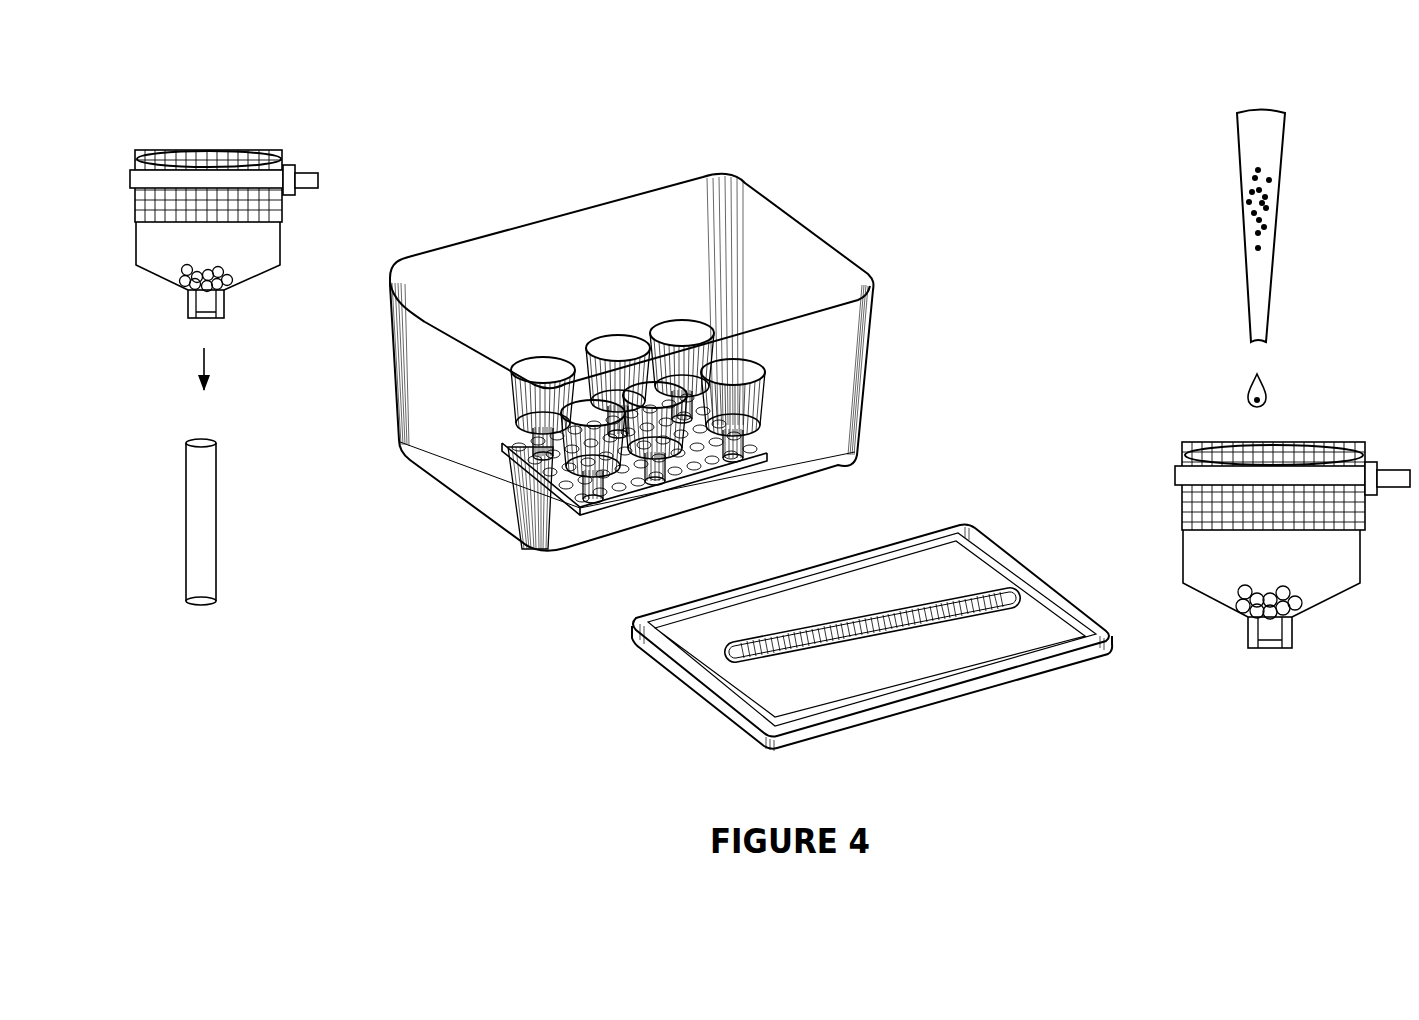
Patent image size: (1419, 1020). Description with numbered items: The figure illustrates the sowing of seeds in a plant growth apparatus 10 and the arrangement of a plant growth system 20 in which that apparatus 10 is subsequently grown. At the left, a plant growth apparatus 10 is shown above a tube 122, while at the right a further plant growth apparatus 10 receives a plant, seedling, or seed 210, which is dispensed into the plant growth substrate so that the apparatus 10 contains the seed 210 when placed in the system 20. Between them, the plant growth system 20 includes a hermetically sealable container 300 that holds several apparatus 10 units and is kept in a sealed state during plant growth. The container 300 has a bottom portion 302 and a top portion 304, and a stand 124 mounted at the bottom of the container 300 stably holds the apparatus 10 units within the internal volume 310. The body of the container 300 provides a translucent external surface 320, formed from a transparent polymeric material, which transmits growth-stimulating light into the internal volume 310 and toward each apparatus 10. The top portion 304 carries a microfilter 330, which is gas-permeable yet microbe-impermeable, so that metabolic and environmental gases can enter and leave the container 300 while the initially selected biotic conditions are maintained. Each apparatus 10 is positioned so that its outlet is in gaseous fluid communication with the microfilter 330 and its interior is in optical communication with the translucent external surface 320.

The plant growth apparatus 10 is at (290, 152).
The plant growth system 20 is at (840, 130).
The tube 122 is at (186, 499).
The stand 124 is at (585, 515).
The plant, seedling, or seed 210 is at (1267, 213).
The hermetically sealable container 300 is at (513, 193).
The bottom portion 302 is at (442, 490).
The top portion 304 is at (663, 652).
The internal volume 310 is at (548, 279).
The translucent external surface 320 is at (813, 260).
The microfilter 330 is at (820, 637).